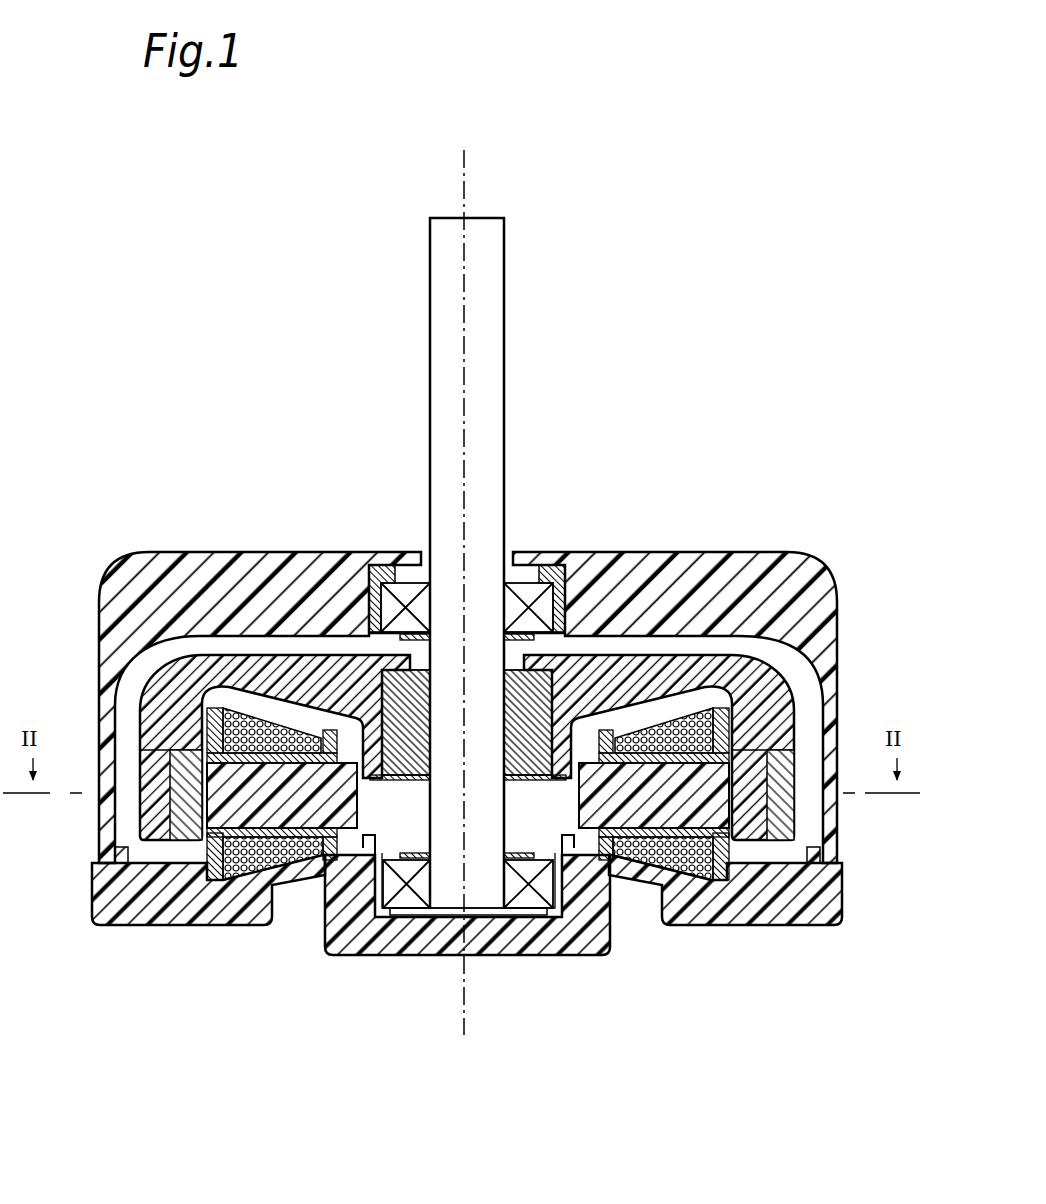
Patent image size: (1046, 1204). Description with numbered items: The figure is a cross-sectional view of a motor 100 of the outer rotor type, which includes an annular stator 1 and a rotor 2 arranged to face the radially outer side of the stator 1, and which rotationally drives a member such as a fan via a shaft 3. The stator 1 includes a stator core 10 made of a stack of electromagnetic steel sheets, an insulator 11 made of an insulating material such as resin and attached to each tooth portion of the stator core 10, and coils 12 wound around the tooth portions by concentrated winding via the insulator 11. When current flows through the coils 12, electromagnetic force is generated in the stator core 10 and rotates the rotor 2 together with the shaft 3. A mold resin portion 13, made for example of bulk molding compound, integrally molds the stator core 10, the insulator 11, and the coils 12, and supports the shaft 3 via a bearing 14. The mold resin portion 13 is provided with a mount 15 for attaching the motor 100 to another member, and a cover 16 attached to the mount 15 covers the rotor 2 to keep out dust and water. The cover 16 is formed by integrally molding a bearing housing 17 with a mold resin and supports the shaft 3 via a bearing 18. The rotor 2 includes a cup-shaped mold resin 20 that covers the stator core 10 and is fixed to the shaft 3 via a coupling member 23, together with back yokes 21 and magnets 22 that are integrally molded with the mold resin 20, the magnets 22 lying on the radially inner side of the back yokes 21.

The motor 100 is at (696, 318).
The stator 1 is at (476, 866).
The rotor 2 is at (525, 654).
The shaft 3 is at (483, 369).
The stator core 10 is at (642, 803).
The insulator 11 is at (742, 880).
The coils 12 is at (688, 862).
The mold resin portion 13 is at (541, 935).
The bearing 14 is at (408, 897).
The mount 15 is at (128, 905).
The cover 16 is at (250, 574).
The bearing housing 17 is at (369, 567).
The bearing 18 is at (533, 556).
The mold resin 20 is at (726, 690).
The back yokes 21 is at (782, 797).
The magnets 22 is at (838, 893).
The coupling member 23 is at (548, 730).